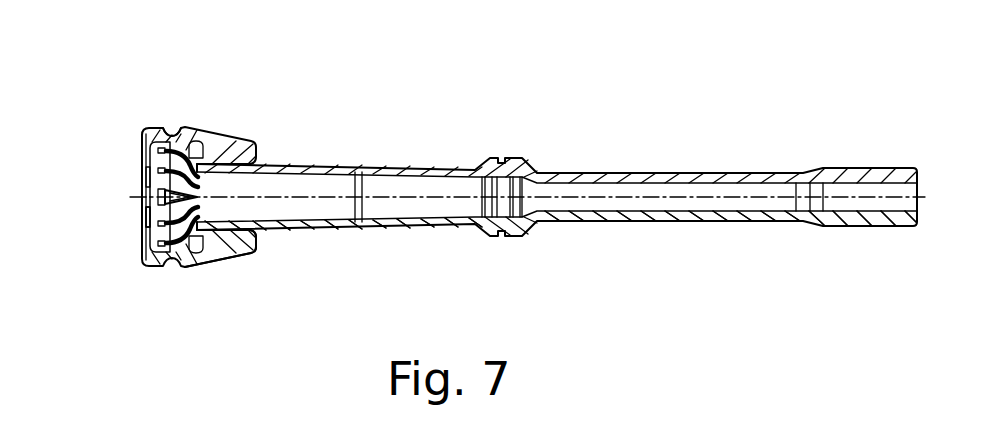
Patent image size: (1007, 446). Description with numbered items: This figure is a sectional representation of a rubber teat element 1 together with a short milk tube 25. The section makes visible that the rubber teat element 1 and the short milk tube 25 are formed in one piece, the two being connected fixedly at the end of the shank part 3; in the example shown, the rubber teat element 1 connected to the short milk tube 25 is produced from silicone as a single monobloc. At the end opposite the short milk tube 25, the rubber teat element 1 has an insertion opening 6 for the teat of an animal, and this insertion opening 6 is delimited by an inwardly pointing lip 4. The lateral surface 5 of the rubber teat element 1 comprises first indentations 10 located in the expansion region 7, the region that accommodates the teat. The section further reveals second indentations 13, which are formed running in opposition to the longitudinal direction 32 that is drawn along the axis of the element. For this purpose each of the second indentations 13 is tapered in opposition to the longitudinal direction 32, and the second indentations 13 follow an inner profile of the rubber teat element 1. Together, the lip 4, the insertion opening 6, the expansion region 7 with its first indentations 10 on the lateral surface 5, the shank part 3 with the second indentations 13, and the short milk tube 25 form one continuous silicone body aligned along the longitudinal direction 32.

The rubber teat element 1 is at (418, 124).
The shank part 3 is at (430, 228).
The inwardly pointing lip 4 is at (146, 156).
The lateral surface 5 is at (183, 248).
The insertion opening 6 is at (150, 230).
The expansion region 7 is at (145, 98).
The first indentations 10 is at (172, 135).
The second indentations 13 is at (152, 236).
The short milk tube 25 is at (678, 225).
The longitudinal direction 32 is at (127, 197).